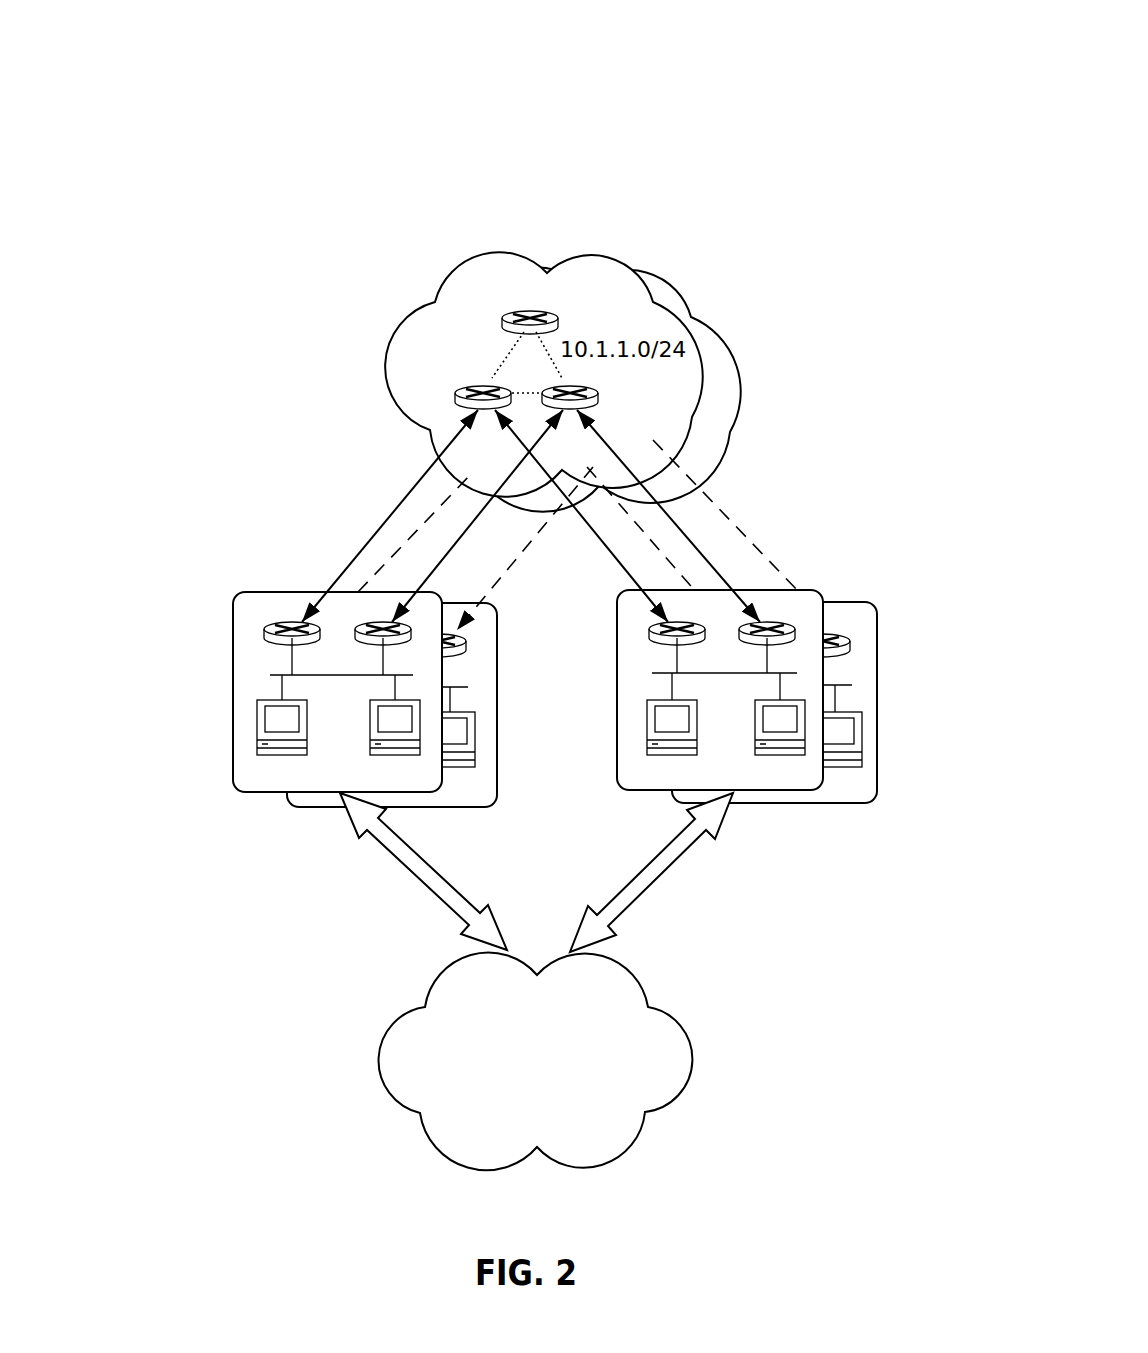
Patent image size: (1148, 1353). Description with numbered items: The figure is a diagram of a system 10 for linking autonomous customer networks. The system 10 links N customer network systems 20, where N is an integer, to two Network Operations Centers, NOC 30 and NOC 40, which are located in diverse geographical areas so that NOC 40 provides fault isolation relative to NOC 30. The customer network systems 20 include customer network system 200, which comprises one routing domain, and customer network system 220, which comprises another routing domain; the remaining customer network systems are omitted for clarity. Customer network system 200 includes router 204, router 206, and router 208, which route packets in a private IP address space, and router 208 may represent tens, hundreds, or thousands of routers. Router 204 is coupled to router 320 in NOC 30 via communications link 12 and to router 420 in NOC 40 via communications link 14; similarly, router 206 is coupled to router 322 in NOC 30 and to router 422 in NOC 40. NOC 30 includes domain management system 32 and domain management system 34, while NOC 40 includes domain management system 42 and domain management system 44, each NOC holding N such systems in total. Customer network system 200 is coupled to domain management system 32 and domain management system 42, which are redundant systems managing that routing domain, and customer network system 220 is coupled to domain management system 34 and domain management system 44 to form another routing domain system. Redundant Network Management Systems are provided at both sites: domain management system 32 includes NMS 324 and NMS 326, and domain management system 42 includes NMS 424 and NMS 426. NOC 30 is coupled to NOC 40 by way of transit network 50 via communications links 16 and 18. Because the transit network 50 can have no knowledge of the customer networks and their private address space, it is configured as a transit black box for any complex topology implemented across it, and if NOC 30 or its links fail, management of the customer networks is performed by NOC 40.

The system 10 is at (790, 98).
The customer network systems 20 is at (428, 212).
The customer network system 200 is at (437, 302).
The router 204 is at (470, 388).
The router 206 is at (592, 390).
The router 208 is at (519, 312).
The customer network system 220 is at (697, 412).
The Network Operations Center 30 is at (208, 537).
The domain management system 32 is at (255, 694).
The domain management system 34 is at (497, 655).
The router 320 is at (268, 626).
The router 322 is at (376, 650).
The NMS 324 is at (258, 738).
The NMS 326 is at (372, 712).
The Network Operations Center 40 is at (822, 542).
The domain management system 42 is at (678, 691).
The domain management system 44 is at (878, 648).
The router 420 is at (658, 624).
The router 422 is at (757, 650).
The NMS 424 is at (647, 718).
The NMS 426 is at (758, 708).
The communications link 12 is at (385, 521).
The communications link 14 is at (618, 556).
The communications link 16 is at (418, 884).
The communications link 18 is at (665, 882).
The transit network 50 is at (685, 1030).